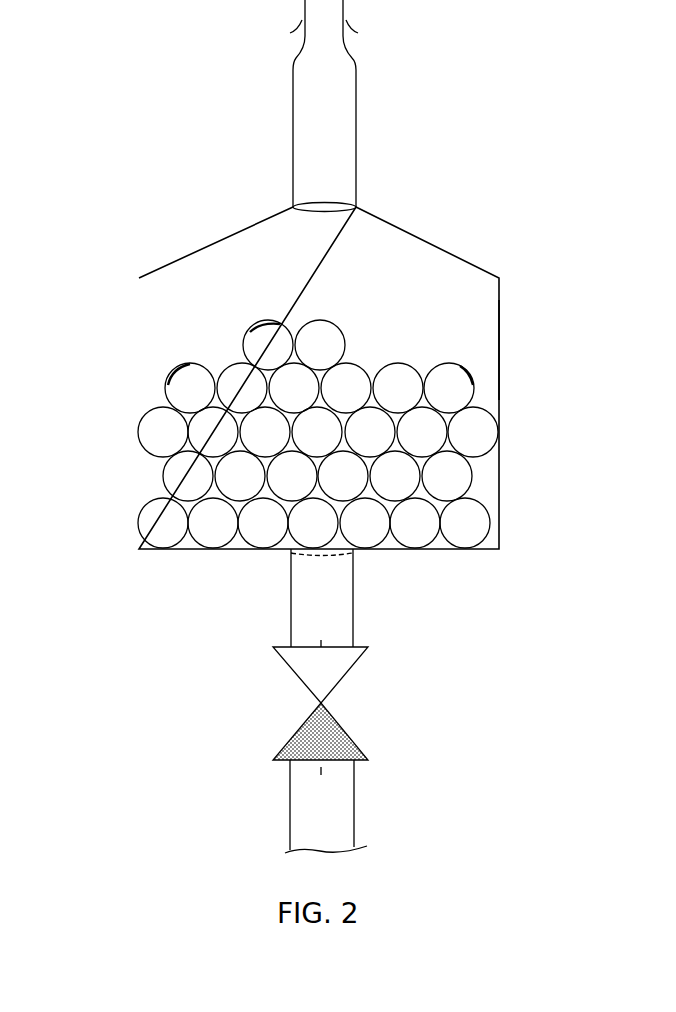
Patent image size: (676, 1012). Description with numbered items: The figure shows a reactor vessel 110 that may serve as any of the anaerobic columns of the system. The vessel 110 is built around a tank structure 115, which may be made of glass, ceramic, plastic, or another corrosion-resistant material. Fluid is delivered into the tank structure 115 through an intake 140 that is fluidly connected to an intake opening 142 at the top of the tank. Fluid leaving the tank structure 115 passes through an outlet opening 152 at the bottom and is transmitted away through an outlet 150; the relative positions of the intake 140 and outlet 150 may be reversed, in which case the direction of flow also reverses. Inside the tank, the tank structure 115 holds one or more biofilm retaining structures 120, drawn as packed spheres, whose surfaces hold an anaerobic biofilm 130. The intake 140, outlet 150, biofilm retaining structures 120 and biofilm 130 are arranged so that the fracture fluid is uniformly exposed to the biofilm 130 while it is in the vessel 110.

The reactor vessel 110 is at (131, 433).
The tank structure 115 is at (501, 352).
The biofilm retaining structure 120 is at (481, 434).
The anaerobic biofilm 130 is at (480, 379).
The intake 140 is at (312, 145).
The intake opening 142 is at (328, 206).
The outlet 150 is at (310, 612).
The outlet opening 152 is at (290, 554).